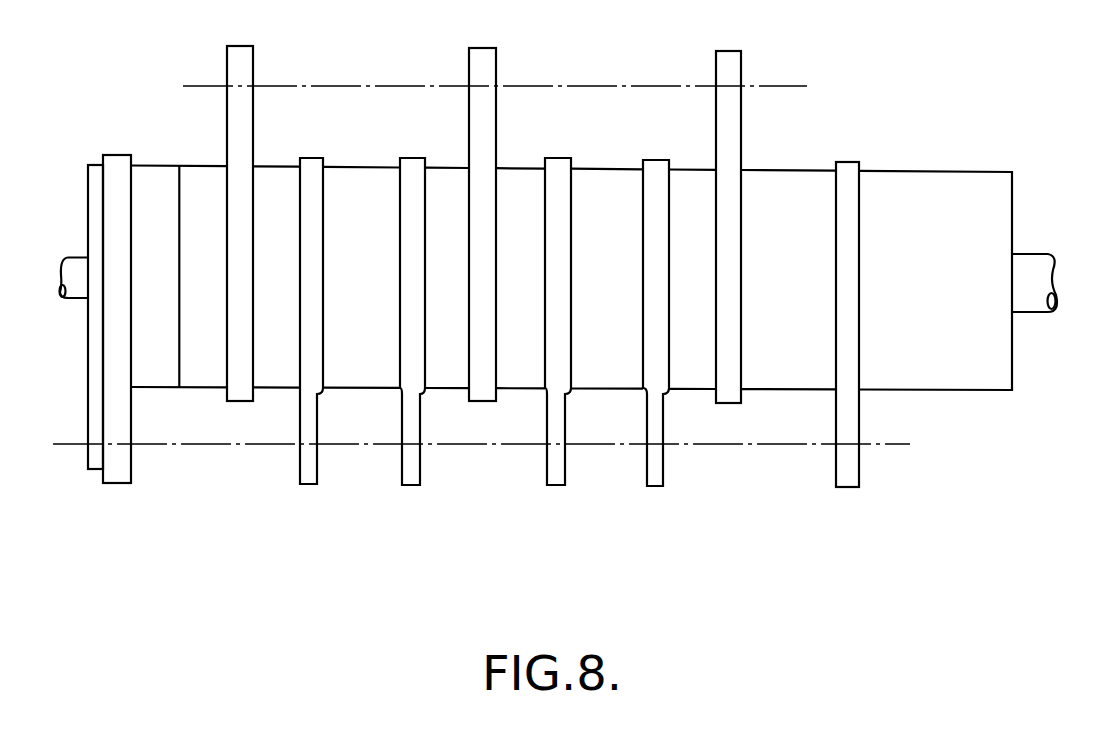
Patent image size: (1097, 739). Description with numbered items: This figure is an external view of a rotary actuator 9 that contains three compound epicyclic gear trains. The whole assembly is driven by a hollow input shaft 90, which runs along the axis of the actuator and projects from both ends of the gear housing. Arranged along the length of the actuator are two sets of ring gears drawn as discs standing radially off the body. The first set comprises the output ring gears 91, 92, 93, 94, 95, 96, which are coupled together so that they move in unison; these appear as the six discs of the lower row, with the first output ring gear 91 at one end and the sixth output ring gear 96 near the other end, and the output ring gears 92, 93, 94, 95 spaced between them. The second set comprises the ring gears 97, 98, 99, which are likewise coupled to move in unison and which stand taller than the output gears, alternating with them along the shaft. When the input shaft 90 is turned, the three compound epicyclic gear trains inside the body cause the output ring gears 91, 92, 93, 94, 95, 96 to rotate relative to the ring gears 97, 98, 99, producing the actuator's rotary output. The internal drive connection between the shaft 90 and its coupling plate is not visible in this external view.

The roller assembly 9 is at (485, 466).
The hollow input shaft 90 is at (1023, 293).
The output ring gear 91 is at (117, 469).
The output ring gear 92 is at (309, 469).
The output ring gear 93 is at (413, 473).
The output ring gear 94 is at (554, 470).
The output ring gear 95 is at (653, 472).
The output ring gear 96 is at (843, 469).
The ring gear 97 is at (237, 64).
The ring gear 98 is at (483, 69).
The ring gear 99 is at (725, 68).